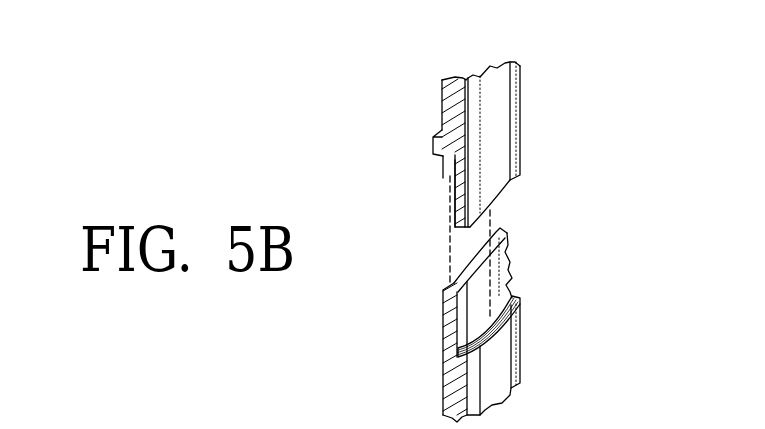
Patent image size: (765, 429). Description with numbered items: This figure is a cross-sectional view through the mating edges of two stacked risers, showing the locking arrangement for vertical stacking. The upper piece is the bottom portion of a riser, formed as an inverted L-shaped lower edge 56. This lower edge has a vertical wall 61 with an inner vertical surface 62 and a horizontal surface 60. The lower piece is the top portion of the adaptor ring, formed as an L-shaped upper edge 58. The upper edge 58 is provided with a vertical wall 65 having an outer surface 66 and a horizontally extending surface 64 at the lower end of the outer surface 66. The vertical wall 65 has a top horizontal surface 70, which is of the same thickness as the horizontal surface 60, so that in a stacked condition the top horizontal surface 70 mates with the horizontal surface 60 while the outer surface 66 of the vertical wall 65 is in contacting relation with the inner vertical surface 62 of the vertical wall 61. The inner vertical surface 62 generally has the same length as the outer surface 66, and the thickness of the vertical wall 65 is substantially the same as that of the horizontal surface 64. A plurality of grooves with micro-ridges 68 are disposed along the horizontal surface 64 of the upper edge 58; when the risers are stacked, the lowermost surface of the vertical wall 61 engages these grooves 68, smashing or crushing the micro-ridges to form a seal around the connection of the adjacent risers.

The inverted L-shaped lower edge 56 is at (520, 100).
The L-shaped upper edge 58 is at (437, 309).
The horizontal surface 60 is at (443, 159).
The vertical wall 61 is at (452, 212).
The inner vertical surface 62 is at (449, 178).
The horizontal surface 64 is at (473, 344).
The vertical wall 65 is at (505, 259).
The outer surface 66 is at (507, 288).
The grooves with micro-ridges 68 is at (520, 303).
The top horizontal surface 70 is at (501, 229).